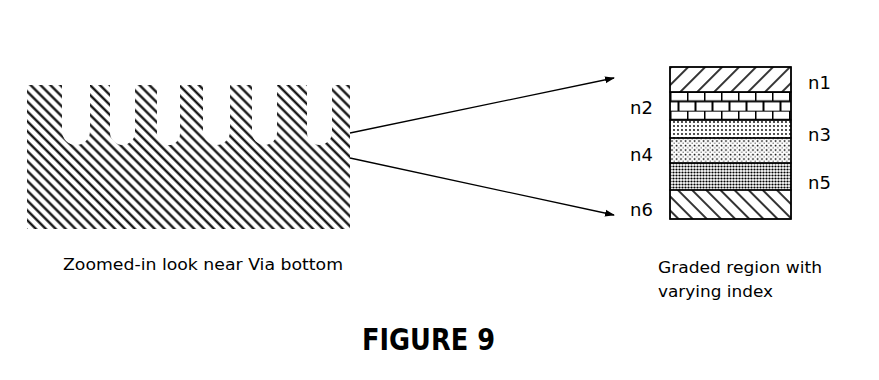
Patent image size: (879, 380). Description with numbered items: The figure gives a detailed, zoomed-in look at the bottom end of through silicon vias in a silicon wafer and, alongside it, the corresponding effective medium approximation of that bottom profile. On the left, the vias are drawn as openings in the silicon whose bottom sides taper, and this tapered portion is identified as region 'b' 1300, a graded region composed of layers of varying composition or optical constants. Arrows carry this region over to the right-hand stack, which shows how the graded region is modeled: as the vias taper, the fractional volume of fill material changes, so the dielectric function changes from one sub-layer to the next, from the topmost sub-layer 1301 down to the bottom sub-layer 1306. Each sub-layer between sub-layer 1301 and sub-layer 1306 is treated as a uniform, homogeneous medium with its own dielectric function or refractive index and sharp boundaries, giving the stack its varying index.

The region 'b' 1300 is at (320, 153).
The sub-layer 1301 is at (730, 67).
The sub-layer 1306 is at (730, 222).